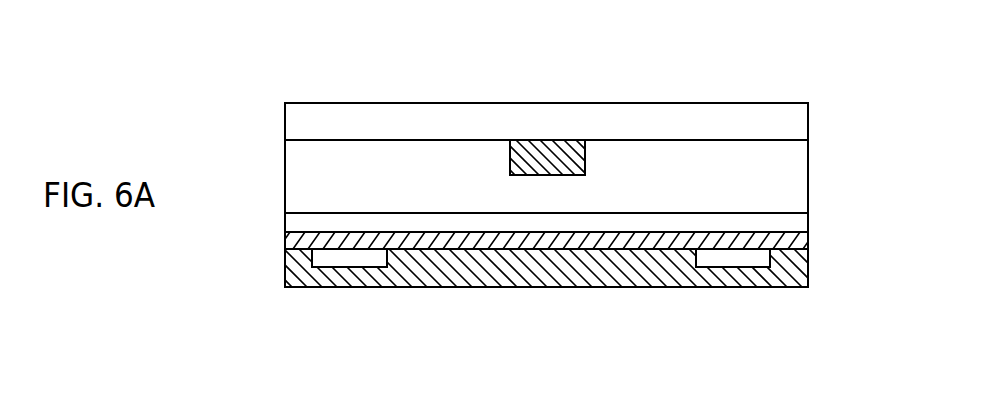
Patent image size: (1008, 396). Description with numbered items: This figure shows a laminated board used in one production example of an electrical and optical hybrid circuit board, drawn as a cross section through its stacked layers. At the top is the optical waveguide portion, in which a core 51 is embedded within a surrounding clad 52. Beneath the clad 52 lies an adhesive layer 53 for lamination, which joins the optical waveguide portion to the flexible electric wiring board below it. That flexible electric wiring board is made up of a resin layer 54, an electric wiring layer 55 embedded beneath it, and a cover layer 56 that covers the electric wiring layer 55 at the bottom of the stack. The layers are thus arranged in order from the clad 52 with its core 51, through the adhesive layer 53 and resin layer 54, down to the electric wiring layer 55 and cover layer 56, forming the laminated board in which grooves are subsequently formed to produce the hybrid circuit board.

The core 51 is at (545, 146).
The clad 52 is at (640, 182).
The adhesive layer for lamination 53 is at (797, 223).
The resin layer of flexible electric wiring board 54 is at (798, 247).
The electric wiring layer 55 is at (343, 262).
The cover layer 56 is at (548, 280).